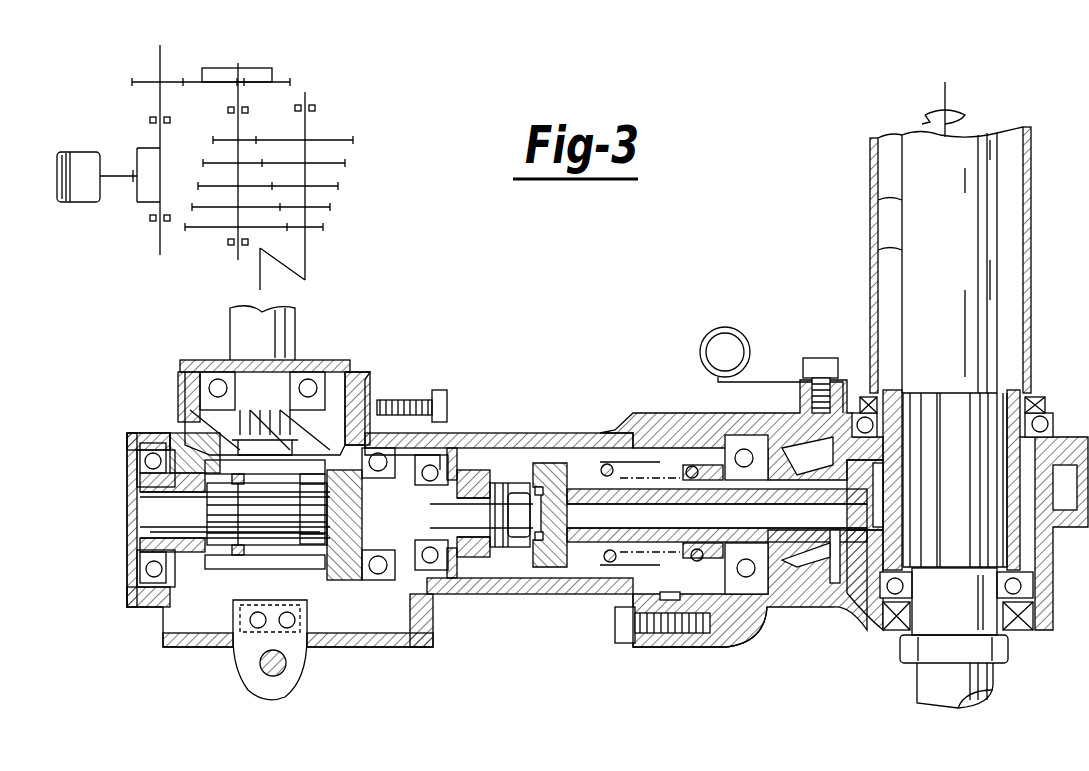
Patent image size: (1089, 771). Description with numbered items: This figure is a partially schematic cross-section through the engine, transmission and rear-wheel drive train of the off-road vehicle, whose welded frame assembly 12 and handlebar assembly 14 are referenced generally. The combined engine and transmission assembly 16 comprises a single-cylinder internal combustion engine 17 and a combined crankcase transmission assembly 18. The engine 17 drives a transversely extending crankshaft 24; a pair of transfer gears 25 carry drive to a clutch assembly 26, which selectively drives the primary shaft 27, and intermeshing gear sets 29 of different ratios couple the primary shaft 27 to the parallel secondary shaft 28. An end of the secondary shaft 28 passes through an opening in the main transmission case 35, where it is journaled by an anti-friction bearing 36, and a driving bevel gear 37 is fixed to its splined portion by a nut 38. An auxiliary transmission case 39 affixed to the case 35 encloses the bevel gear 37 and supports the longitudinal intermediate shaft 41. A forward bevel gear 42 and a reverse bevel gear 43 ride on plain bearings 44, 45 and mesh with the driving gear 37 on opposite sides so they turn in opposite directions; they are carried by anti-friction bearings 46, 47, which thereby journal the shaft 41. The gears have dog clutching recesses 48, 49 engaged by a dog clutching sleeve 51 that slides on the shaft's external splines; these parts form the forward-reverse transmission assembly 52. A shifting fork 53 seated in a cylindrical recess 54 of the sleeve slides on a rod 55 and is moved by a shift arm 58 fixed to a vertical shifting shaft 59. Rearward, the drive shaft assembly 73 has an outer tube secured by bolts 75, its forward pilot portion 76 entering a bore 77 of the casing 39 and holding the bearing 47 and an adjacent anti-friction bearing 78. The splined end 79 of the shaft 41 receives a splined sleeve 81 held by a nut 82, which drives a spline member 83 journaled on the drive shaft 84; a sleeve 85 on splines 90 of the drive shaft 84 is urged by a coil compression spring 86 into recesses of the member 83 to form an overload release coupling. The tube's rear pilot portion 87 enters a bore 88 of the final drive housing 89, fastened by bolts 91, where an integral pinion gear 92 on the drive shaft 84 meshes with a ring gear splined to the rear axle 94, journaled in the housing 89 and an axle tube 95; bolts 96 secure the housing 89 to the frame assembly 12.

The frame assembly 12 is at (742, 330).
The handlebar assembly 14 is at (595, 600).
The combined engine and transmission assembly 16 is at (125, 218).
The internal combustion engine 17 is at (87, 201).
The combined crankcase transmission assembly 18 is at (340, 120).
The crankshaft 24 is at (158, 97).
The transfer gears 25 is at (170, 81).
The clutch assembly 26 is at (272, 73).
The primary shaft 27 is at (238, 254).
The transmission secondary shaft 28 is at (295, 320).
The gear sets 29 is at (353, 140).
The main transmission case 35 is at (440, 395).
The anti-friction bearing 36 is at (340, 372).
The driving bevel gear 37 is at (178, 415).
The nut 38 is at (240, 360).
The auxiliary transmission case 39 is at (150, 645).
The intermediate shaft 41 is at (137, 540).
The forward bevel gear 42 is at (185, 600).
The reverse bevel gear 43 is at (340, 580).
The plain bearing 44 is at (140, 480).
The plain bearing 45 is at (330, 515).
The anti-friction bearing 46 is at (145, 585).
The anti-friction bearing 47 is at (385, 478).
The dog clutching recess 48 is at (185, 505).
The dog clutching recess 49 is at (372, 395).
The dog clutching sleeve 51 is at (290, 569).
The forward-reverse transmission assembly 52 is at (225, 570).
The shifting fork 53 is at (244, 555).
The cylindrical recess 54 is at (265, 436).
The rod 55 is at (400, 640).
The shift arm 58 is at (240, 690).
The shifting shaft 59 is at (285, 680).
The drive shaft assembly 73 is at (660, 362).
The bolts 75 is at (455, 436).
The forward pilot portion 76 is at (378, 580).
The bore 77 is at (430, 598).
The anti-friction bearing 78 is at (432, 455).
The splined end 79 is at (445, 475).
The splined sleeve 81 is at (472, 460).
The nut 82 is at (535, 567).
The spline member 83 is at (505, 555).
The drive shaft 84 is at (640, 620).
The sleeve 85 is at (575, 485).
The coil compression spring 86 is at (600, 540).
The pilot portion 87 is at (665, 425).
The bore 88 is at (680, 633).
The final drive housing 89 is at (848, 598).
The splines 90 is at (680, 458).
The bolts 91 is at (665, 600).
The pinion gear 92 is at (795, 600).
The rear axle 94 is at (870, 210).
The axle tube 95 is at (878, 255).
The bolts 96 is at (825, 358).